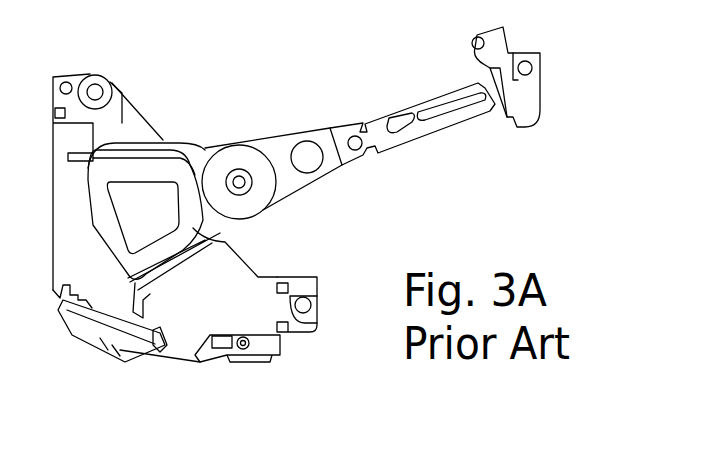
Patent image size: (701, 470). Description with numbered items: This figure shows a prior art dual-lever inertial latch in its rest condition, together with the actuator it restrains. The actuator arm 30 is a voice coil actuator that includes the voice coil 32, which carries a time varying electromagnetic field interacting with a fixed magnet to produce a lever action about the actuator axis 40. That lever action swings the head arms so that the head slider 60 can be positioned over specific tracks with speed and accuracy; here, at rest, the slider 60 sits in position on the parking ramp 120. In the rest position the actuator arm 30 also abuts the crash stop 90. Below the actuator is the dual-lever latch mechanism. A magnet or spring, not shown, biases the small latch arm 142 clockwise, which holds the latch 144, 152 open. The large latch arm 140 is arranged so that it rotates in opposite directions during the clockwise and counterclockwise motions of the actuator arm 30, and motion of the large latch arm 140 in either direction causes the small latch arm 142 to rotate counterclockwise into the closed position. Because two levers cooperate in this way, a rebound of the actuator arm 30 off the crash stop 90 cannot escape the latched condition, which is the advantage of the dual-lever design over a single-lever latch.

The actuator arm 30 is at (300, 142).
The voice coil 32 is at (157, 162).
The actuator axis 40 is at (242, 190).
The head slider unit 60 is at (410, 140).
The crash stop 90 is at (108, 80).
The parking ramp 120 is at (533, 53).
The large latch arm 140 is at (220, 357).
The small latch arm 142 is at (112, 347).
The latch 144 is at (170, 333).
The latch 152 is at (143, 305).